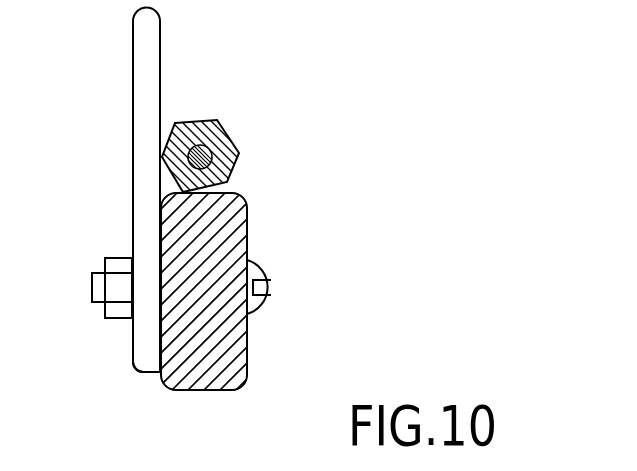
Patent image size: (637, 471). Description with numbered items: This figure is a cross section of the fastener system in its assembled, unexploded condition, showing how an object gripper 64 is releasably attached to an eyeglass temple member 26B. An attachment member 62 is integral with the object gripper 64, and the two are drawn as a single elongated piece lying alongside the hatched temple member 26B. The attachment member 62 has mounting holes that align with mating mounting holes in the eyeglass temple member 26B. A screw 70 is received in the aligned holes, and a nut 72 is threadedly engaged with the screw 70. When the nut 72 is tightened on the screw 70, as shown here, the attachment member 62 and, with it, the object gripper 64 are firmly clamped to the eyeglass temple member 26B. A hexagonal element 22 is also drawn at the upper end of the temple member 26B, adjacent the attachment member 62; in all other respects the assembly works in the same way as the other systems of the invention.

The hex nut 22 is at (222, 145).
The eyeglass temple member 26B is at (262, 341).
The attachment member 62 is at (140, 343).
The object gripper 64 is at (162, 63).
The screw 70 is at (257, 274).
The nut 72 is at (118, 265).